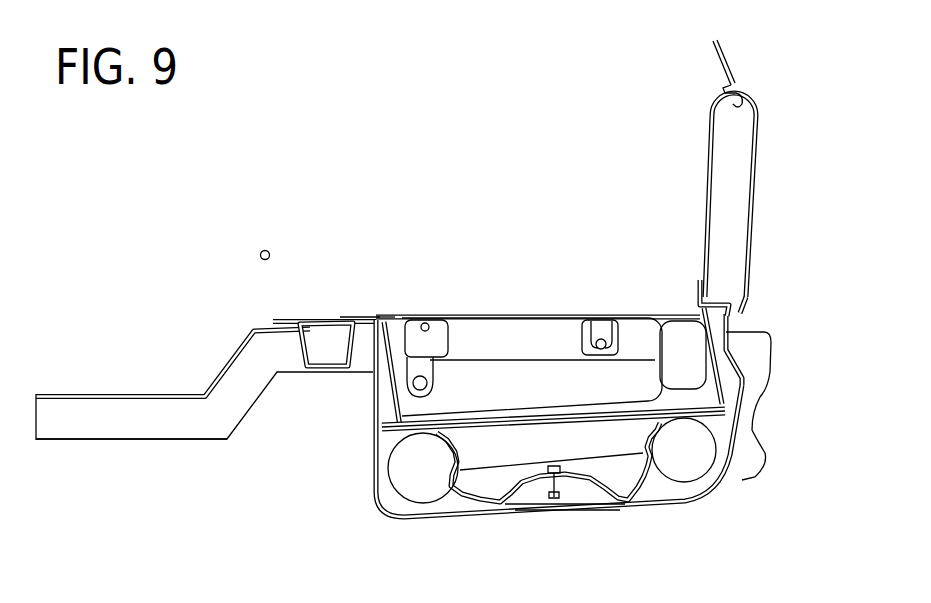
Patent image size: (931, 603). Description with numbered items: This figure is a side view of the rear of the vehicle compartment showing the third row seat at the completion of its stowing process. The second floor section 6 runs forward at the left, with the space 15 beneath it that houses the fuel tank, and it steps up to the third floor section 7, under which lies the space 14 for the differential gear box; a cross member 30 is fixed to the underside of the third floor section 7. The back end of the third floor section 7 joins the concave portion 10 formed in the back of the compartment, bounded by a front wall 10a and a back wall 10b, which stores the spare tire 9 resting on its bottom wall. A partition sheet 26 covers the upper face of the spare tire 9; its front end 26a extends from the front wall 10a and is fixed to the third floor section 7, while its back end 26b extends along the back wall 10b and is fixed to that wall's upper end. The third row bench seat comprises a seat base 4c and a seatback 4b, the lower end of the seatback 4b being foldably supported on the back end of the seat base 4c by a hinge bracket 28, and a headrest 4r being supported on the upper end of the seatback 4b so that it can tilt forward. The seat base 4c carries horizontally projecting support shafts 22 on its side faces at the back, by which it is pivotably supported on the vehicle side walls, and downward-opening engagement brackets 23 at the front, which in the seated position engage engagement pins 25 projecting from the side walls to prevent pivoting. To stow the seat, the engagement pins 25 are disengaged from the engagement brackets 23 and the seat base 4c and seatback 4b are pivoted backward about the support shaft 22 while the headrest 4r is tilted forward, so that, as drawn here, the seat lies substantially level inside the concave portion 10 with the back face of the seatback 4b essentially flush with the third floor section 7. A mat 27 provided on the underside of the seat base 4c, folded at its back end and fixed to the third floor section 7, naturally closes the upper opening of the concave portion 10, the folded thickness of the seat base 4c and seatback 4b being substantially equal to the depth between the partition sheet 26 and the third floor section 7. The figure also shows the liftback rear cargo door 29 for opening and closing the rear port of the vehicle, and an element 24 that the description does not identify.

The second floor section 6 is at (100, 393).
The third floor section 7 is at (289, 322).
The spare tire 9 is at (691, 463).
The concave portion 10 is at (745, 377).
The front wall of the concave portion 10a is at (372, 478).
The back wall of the concave portion 10b is at (745, 405).
The space under the third floor 14 is at (250, 437).
The space under the second floor 15 is at (92, 452).
The support shaft 22 is at (432, 318).
The engagement bracket 23 is at (628, 328).
The latch bracket 24 is at (597, 320).
The engagement pin 25 is at (259, 254).
The partition sheet 26 is at (510, 512).
The front end of the partition sheet 26a is at (362, 320).
The back end of the partition sheet 26b is at (712, 297).
The mat 27 is at (378, 315).
The hinge bracket 28 is at (475, 398).
The liftback rear cargo door 29 is at (760, 155).
The cross member 30 is at (298, 352).
The seatback 4b is at (378, 422).
The seat base 4c is at (527, 320).
The headrest 4r is at (700, 332).